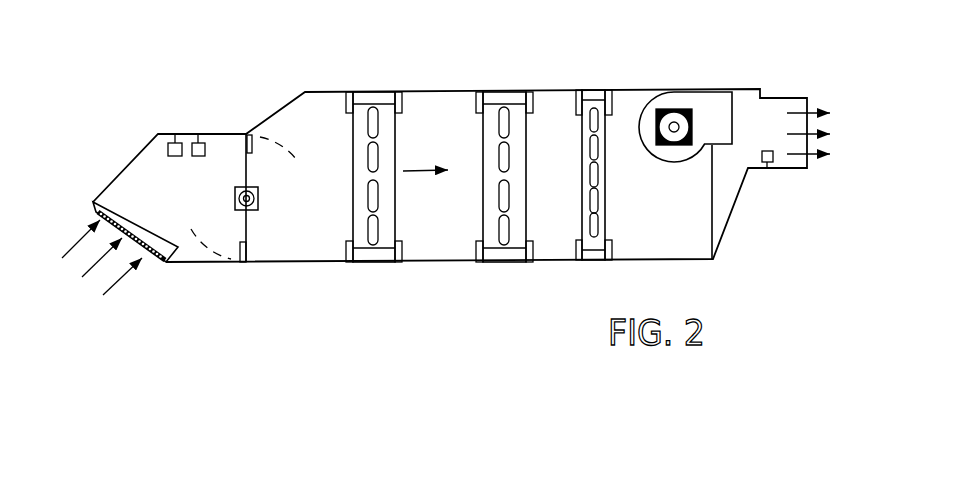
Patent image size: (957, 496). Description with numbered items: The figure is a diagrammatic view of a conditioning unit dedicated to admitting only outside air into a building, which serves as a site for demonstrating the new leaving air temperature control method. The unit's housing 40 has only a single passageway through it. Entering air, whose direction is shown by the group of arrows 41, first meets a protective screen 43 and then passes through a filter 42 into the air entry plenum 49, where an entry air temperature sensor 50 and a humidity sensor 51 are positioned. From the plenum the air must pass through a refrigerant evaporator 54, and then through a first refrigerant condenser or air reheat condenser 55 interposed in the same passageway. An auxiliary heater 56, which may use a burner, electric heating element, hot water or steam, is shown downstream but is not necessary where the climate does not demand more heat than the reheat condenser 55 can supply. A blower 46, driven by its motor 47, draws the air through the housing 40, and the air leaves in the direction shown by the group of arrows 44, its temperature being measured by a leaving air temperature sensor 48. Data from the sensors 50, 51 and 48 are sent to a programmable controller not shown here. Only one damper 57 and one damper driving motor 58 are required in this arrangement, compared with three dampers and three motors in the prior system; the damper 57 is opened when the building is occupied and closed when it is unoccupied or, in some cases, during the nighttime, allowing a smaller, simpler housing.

The housing 40 is at (268, 108).
The group of arrows 41 is at (128, 287).
The filter 42 is at (120, 203).
The protective screen 43 is at (102, 210).
The group of arrows 44 is at (827, 163).
The blower 46 is at (672, 142).
The motor 47 is at (683, 146).
The leaving air temperature sensor 48 is at (773, 163).
The air entry plenum 49 is at (142, 163).
The entry air temperature sensor 50 is at (173, 143).
The humidity sensor 51 is at (205, 151).
The refrigerant evaporator 54 is at (397, 120).
The air reheat condenser 55 is at (527, 120).
The auxiliary heater 56 is at (605, 123).
The damper 57 is at (246, 167).
The damper driving motor 58 is at (257, 207).